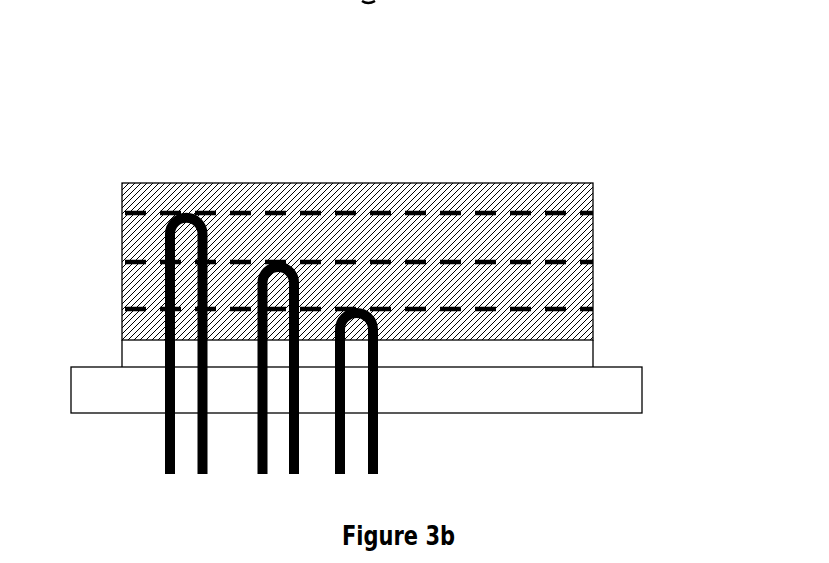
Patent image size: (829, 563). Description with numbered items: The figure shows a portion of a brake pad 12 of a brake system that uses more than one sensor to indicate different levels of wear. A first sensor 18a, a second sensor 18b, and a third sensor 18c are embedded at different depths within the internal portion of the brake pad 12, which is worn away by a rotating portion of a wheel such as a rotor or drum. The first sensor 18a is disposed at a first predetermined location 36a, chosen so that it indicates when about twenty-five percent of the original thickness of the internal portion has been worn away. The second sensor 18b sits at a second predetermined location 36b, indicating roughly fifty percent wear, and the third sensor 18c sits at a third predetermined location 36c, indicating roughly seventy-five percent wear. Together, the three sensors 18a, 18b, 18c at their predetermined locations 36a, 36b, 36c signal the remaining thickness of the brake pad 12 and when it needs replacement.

The brake pad 12 is at (118, 281).
The first sensor 18a is at (186, 205).
The second sensor 18b is at (279, 252).
The third sensor 18c is at (359, 301).
The first predetermined location 36a is at (210, 205).
The second predetermined location 36b is at (314, 252).
The third predetermined location 36c is at (418, 318).